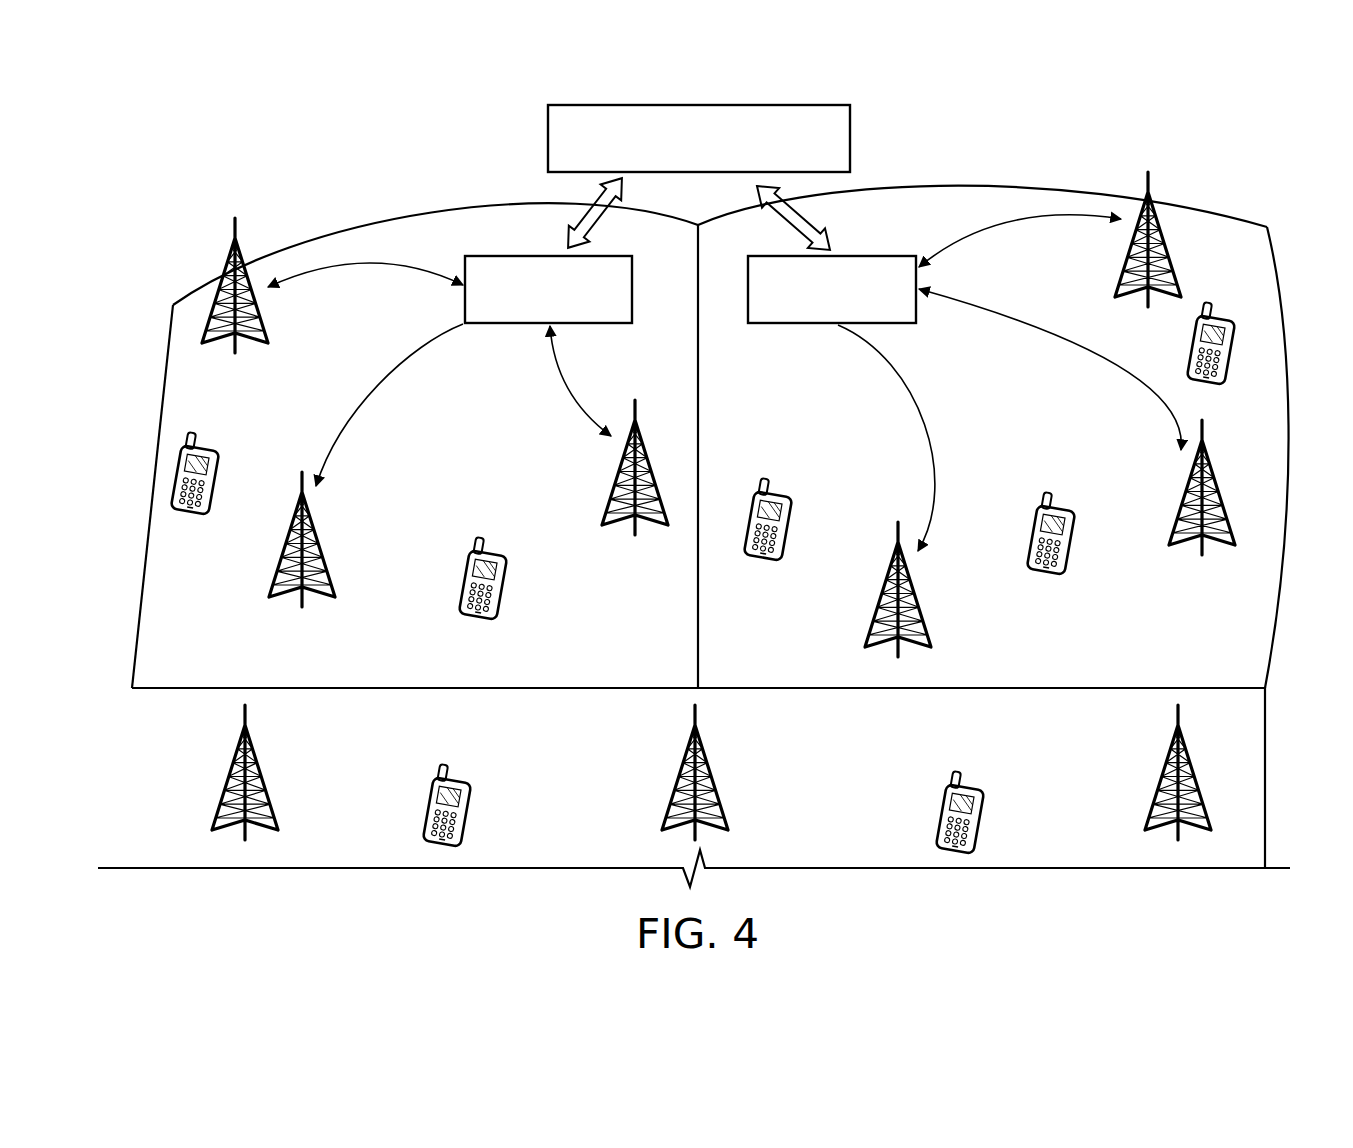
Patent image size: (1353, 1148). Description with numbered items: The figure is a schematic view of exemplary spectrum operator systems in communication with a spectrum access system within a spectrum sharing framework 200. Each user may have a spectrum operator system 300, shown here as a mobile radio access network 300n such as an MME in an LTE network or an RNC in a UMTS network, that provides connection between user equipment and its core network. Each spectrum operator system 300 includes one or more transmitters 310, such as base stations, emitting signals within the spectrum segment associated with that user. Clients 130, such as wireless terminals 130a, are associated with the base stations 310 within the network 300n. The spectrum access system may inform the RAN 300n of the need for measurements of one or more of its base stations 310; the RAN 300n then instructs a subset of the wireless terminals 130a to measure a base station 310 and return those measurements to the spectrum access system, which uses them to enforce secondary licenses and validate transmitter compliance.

The spectrum sharing framework 200 is at (808, 105).
The spectrum operator system 300 is at (690, 267).
The mobile radio access network 300n is at (532, 256).
The transmitter 310 is at (235, 222).
The client 130 is at (717, 549).
The wireless terminal 130a is at (201, 452).